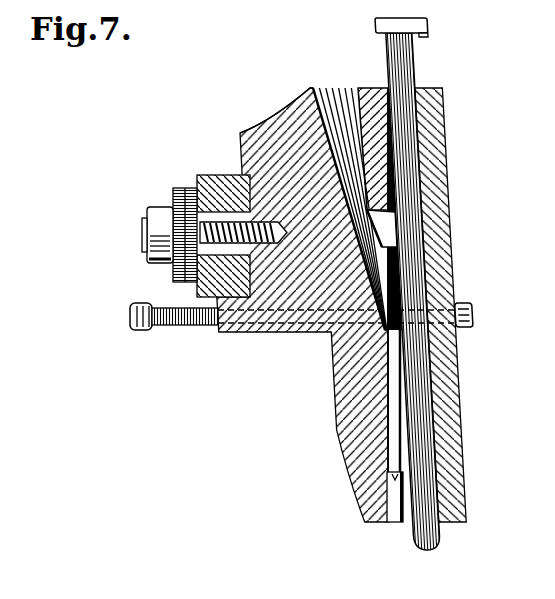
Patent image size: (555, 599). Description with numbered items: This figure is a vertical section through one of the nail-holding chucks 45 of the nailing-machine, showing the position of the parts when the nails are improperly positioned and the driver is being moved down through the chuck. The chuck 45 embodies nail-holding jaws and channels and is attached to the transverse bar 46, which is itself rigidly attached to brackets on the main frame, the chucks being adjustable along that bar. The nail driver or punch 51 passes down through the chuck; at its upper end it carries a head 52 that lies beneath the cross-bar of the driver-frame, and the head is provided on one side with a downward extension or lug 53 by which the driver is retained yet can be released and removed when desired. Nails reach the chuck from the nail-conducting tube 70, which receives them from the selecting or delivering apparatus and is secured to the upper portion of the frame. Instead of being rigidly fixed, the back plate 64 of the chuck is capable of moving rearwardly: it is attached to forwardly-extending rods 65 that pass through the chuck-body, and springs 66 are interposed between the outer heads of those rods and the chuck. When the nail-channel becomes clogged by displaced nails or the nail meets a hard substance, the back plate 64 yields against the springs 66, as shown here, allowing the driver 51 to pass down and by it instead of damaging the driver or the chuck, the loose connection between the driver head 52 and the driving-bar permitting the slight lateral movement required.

The nail chuck 45 is at (247, 132).
The transverse bar 46 is at (201, 175).
The nail driver 51 is at (424, 400).
The driver head 52 is at (428, 25).
The downward extension 53 is at (427, 37).
The back plate 64 is at (456, 446).
The forwardly-extending rod 65 is at (462, 305).
The spring 66 is at (188, 327).
The nail-conducting tube 70 is at (332, 88).